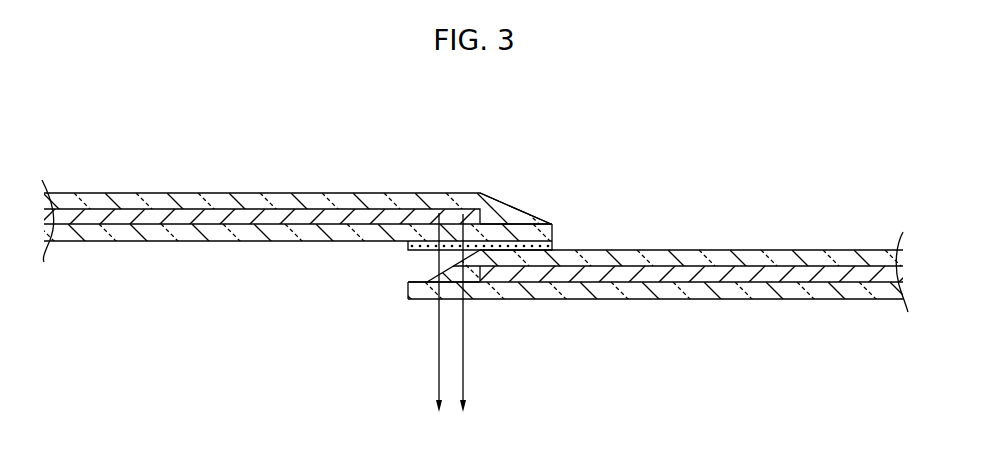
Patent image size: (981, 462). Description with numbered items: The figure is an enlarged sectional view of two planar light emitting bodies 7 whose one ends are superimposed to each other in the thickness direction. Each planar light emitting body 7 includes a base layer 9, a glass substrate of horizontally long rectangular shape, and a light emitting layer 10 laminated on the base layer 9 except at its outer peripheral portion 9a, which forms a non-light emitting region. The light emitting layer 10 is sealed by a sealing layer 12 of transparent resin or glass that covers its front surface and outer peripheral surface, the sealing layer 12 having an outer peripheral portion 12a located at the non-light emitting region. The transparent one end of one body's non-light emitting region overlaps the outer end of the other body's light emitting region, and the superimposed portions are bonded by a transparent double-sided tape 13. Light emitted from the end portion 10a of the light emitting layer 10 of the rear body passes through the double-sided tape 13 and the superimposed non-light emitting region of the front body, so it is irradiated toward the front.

The planar light emitting body 7 is at (475, 255).
The base layer 9 is at (130, 236).
The outer peripheral portion 9a is at (553, 232).
The light emitting layer 10 is at (211, 216).
The end portion 10a is at (441, 210).
The sealing layer 12 is at (258, 193).
The outer peripheral portion 12a is at (497, 200).
The transparent double-sided tape 13 is at (553, 247).